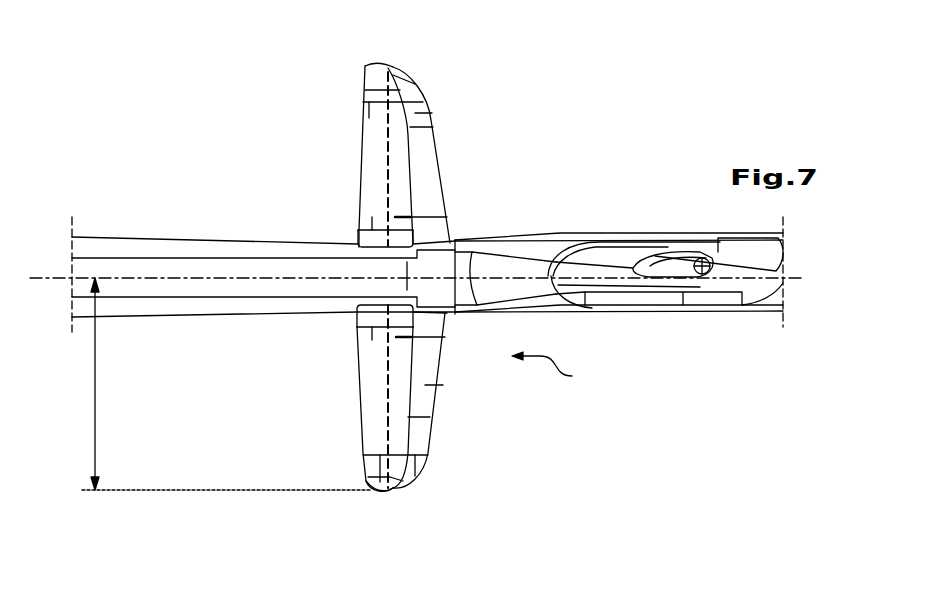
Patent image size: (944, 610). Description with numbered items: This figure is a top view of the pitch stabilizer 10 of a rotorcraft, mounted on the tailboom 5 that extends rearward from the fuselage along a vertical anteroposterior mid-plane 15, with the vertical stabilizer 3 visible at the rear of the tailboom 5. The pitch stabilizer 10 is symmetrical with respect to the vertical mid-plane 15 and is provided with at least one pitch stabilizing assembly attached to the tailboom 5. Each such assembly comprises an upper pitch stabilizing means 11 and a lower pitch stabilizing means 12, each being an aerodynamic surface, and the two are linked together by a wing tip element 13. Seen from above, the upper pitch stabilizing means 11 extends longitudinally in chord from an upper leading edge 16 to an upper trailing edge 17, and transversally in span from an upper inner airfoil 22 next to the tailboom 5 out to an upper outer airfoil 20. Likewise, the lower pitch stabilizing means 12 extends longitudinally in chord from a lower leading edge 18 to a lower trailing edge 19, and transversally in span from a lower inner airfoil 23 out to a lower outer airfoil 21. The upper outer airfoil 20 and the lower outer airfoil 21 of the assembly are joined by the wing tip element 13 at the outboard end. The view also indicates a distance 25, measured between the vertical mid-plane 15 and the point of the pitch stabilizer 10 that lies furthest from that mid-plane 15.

The vertical stabilizer 3 is at (703, 240).
The tailboom 5 is at (187, 247).
The pitch stabilizer 10 is at (558, 371).
The upper pitch stabilizing means 11 is at (398, 167).
The lower pitch stabilizing means 12 is at (417, 112).
The wing tip element 13 is at (370, 91).
The vertical mid-plane 15 is at (47, 278).
The upper leading edge 16 is at (362, 132).
The upper trailing edge 17 is at (427, 130).
The lower leading edge 18 is at (383, 157).
The lower trailing edge 19 is at (435, 137).
The upper outer airfoil 20 is at (363, 120).
The lower outer airfoil 21 is at (416, 73).
The upper inner airfoil 22 is at (372, 227).
The lower inner airfoil 23 is at (427, 225).
The distance 25 is at (95, 372).